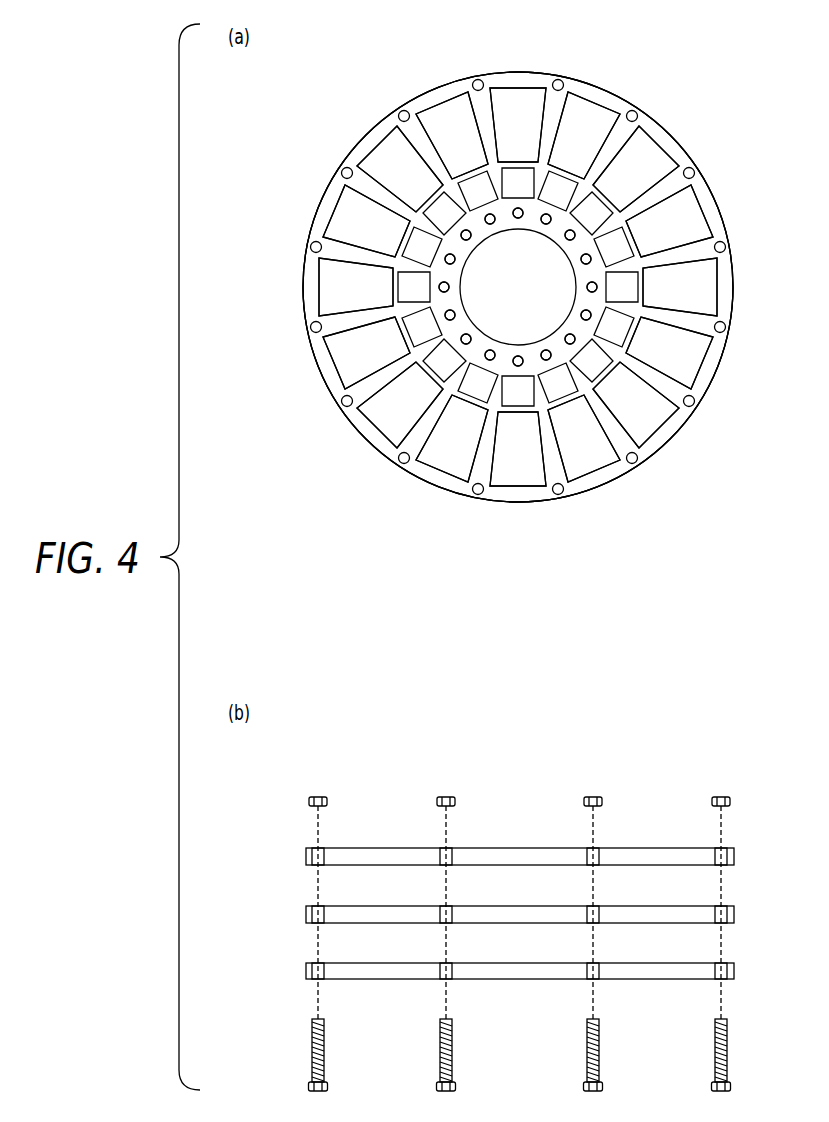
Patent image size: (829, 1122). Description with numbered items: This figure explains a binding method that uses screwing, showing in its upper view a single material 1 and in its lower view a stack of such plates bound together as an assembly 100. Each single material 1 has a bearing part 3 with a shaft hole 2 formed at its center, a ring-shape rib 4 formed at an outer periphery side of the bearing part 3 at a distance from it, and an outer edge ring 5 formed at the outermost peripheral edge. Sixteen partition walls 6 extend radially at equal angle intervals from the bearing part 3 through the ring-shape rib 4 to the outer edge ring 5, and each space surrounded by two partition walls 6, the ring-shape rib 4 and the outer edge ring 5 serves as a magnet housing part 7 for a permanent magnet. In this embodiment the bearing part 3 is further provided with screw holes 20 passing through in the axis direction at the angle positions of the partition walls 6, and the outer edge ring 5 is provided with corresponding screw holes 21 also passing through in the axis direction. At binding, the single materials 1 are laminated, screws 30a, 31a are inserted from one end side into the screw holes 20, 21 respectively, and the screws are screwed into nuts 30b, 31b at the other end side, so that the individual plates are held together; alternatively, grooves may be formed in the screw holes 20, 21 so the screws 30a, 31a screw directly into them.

The single material 1 is at (358, 128).
The shaft hole 2 is at (500, 310).
The bearing part 3 is at (535, 212).
The ring-shape rib 4 is at (612, 197).
The outer edge ring 5 is at (712, 210).
The partition wall 6 is at (657, 380).
The magnet housing part 7 is at (454, 128).
The screw hole 20 is at (447, 256).
The screw hole 21 is at (310, 247).
The plate stack 100 is at (701, 480).
The screw 30a is at (452, 1050).
The inner nut 30b is at (449, 796).
The screw 31a is at (312, 1050).
The nut 31b is at (321, 796).